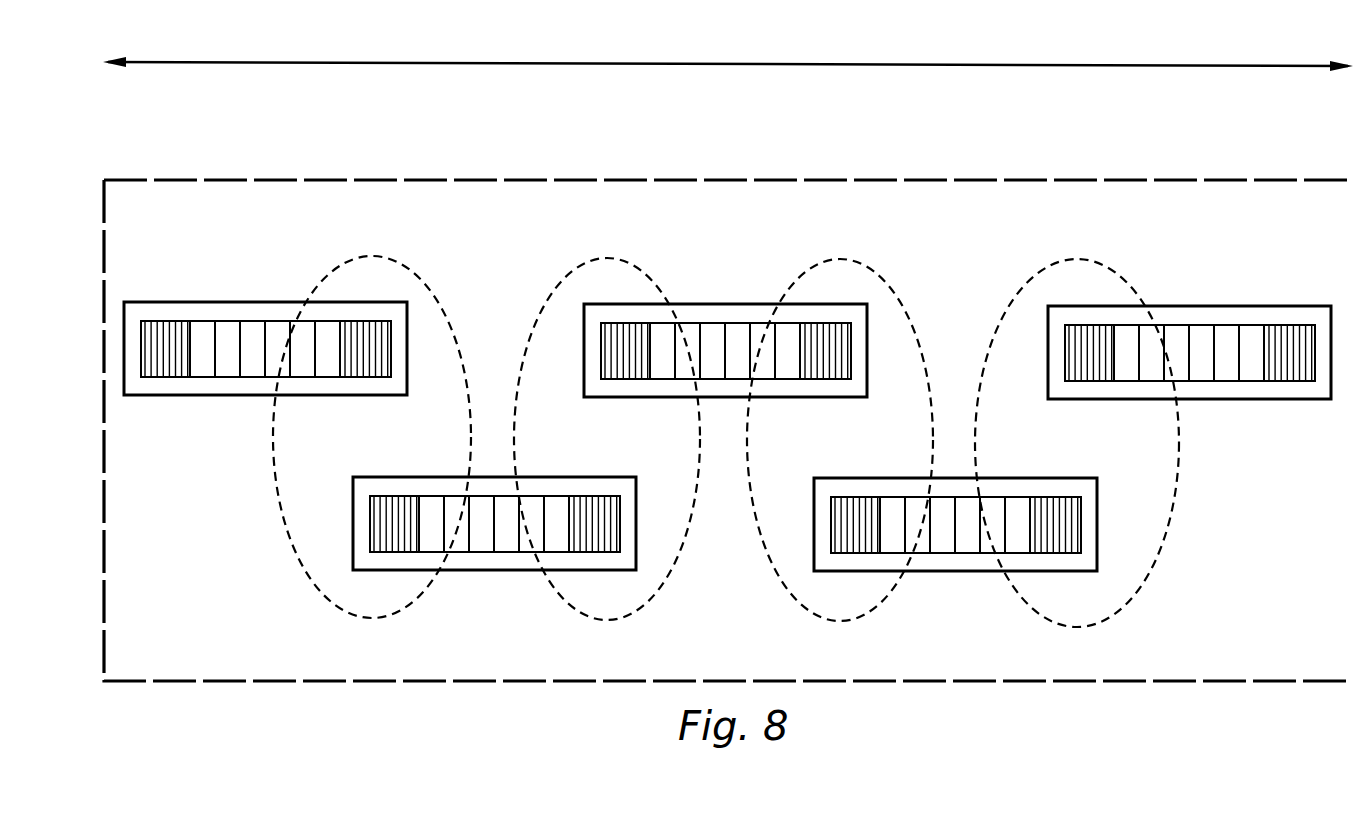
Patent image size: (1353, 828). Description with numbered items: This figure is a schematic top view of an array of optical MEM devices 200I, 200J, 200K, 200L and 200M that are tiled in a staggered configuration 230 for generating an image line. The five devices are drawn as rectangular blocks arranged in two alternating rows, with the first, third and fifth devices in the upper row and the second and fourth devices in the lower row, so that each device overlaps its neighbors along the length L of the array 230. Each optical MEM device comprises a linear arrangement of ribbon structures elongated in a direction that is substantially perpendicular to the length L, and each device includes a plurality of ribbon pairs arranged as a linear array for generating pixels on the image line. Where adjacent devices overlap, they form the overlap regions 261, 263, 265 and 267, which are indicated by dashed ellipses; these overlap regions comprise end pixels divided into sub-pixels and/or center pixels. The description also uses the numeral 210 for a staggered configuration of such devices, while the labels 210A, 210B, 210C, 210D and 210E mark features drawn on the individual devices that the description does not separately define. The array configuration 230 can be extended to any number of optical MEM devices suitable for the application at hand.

The length of the array L is at (728, 54).
The staggered configuration 230 is at (560, 182).
The overlap region 261 is at (425, 288).
The overlap region 263 is at (663, 297).
The overlap region 265 is at (898, 295).
The overlap region 267 is at (1138, 288).
The optical MEM device 200I is at (265, 351).
The optical MEM device 200J is at (494, 491).
The optical MEM device 200K is at (725, 398).
The optical MEM device 200L is at (955, 479).
The optical MEM device 200M is at (1189, 354).
The staggered configuration 210 is at (243, 377).
The display region A 210A is at (278, 321).
The display region B 210B is at (489, 496).
The display region C 210C is at (717, 379).
The display region D 210D is at (948, 497).
The display region E 210E is at (1252, 381).